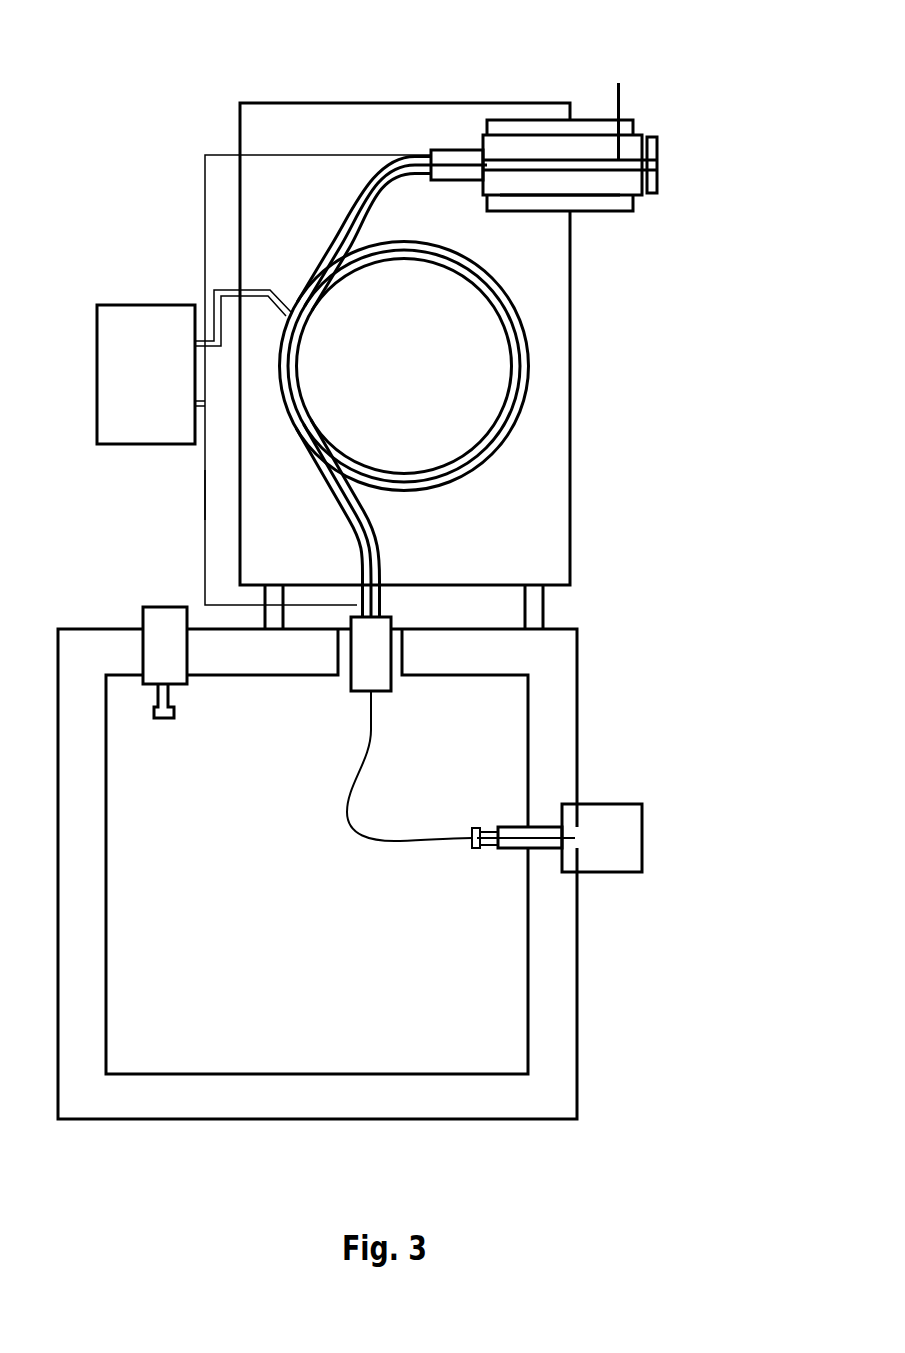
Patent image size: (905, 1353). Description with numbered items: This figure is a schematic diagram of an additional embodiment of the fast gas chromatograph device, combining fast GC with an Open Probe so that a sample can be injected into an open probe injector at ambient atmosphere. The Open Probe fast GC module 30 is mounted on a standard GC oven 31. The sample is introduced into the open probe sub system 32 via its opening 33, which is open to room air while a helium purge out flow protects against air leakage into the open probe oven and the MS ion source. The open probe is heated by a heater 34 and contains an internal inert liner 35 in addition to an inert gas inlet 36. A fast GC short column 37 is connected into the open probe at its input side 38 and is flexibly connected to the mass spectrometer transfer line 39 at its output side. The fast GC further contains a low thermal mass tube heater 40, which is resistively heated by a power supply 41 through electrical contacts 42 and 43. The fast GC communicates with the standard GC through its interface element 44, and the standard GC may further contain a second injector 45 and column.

The Open Probe fast GC module 30 is at (262, 100).
The standard GC oven 31 is at (107, 628).
The open probe sub system 32 is at (547, 135).
The opening 33 is at (660, 166).
The heater 34 is at (500, 120).
The internal inert liner 35 is at (588, 173).
The inert gas inlet 36 is at (624, 92).
The fast GC short column 37 is at (372, 850).
The input side 38 is at (460, 148).
The mass spectrometer transfer line 39 is at (600, 804).
The low thermal mass tube heater 40 is at (350, 548).
The power supply 41 is at (129, 303).
The electrical contact 42 is at (203, 201).
The electrical contact 43 is at (204, 493).
The interface element 44 is at (350, 700).
The second injector 45 is at (162, 606).